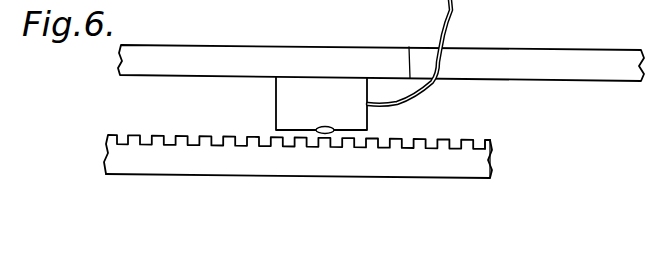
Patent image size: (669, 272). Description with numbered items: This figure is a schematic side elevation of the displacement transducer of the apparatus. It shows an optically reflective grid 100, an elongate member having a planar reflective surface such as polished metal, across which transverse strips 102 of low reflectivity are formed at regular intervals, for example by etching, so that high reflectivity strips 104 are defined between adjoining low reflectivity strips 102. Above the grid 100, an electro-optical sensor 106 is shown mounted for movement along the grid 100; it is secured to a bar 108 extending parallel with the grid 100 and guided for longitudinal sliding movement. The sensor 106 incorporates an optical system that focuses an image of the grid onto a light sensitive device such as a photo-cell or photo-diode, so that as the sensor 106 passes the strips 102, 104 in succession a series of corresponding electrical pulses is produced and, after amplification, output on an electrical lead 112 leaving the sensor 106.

The optically reflective grid 100 is at (324, 155).
The strips of low reflectivity 102 is at (482, 140).
The high reflectivity strips 104 is at (415, 137).
The electro-optical sensor 106 is at (300, 88).
The bar 108 is at (534, 59).
The electrical lead 112 is at (452, 14).